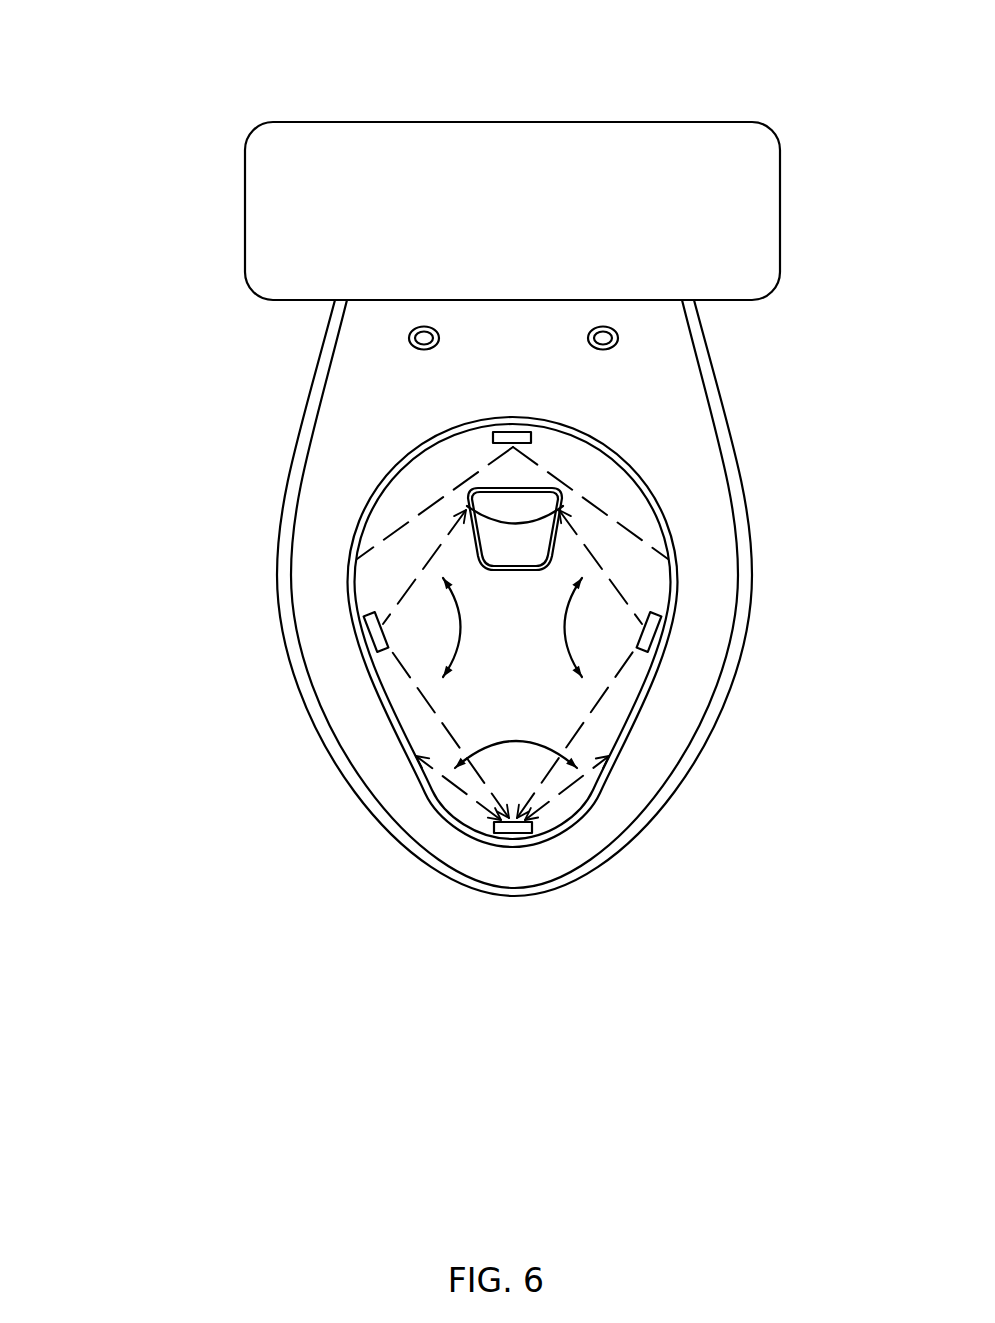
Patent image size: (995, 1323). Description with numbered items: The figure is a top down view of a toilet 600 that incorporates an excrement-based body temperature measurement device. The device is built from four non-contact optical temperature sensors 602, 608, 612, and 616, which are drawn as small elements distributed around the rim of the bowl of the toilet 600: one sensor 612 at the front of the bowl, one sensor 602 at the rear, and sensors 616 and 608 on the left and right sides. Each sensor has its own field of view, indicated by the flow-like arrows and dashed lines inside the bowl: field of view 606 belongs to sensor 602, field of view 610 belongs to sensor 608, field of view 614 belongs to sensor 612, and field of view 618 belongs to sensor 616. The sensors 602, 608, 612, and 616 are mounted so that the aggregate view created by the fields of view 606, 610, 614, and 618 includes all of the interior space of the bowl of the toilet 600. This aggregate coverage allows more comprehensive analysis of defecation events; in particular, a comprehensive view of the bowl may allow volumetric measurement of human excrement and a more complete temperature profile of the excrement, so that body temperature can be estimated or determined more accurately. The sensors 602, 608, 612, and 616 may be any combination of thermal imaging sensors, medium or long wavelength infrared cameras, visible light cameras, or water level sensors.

The toilet 600 is at (158, 58).
The non-contact optical temperature sensor 602 is at (491, 827).
The field of view 606 is at (510, 742).
The non-contact optical temperature sensor 608 is at (658, 638).
The field of view 610 is at (573, 657).
The non-contact optical temperature sensor 612 is at (509, 431).
The field of view 614 is at (515, 524).
The non-contact optical temperature sensor 616 is at (367, 620).
The field of view 618 is at (458, 628).